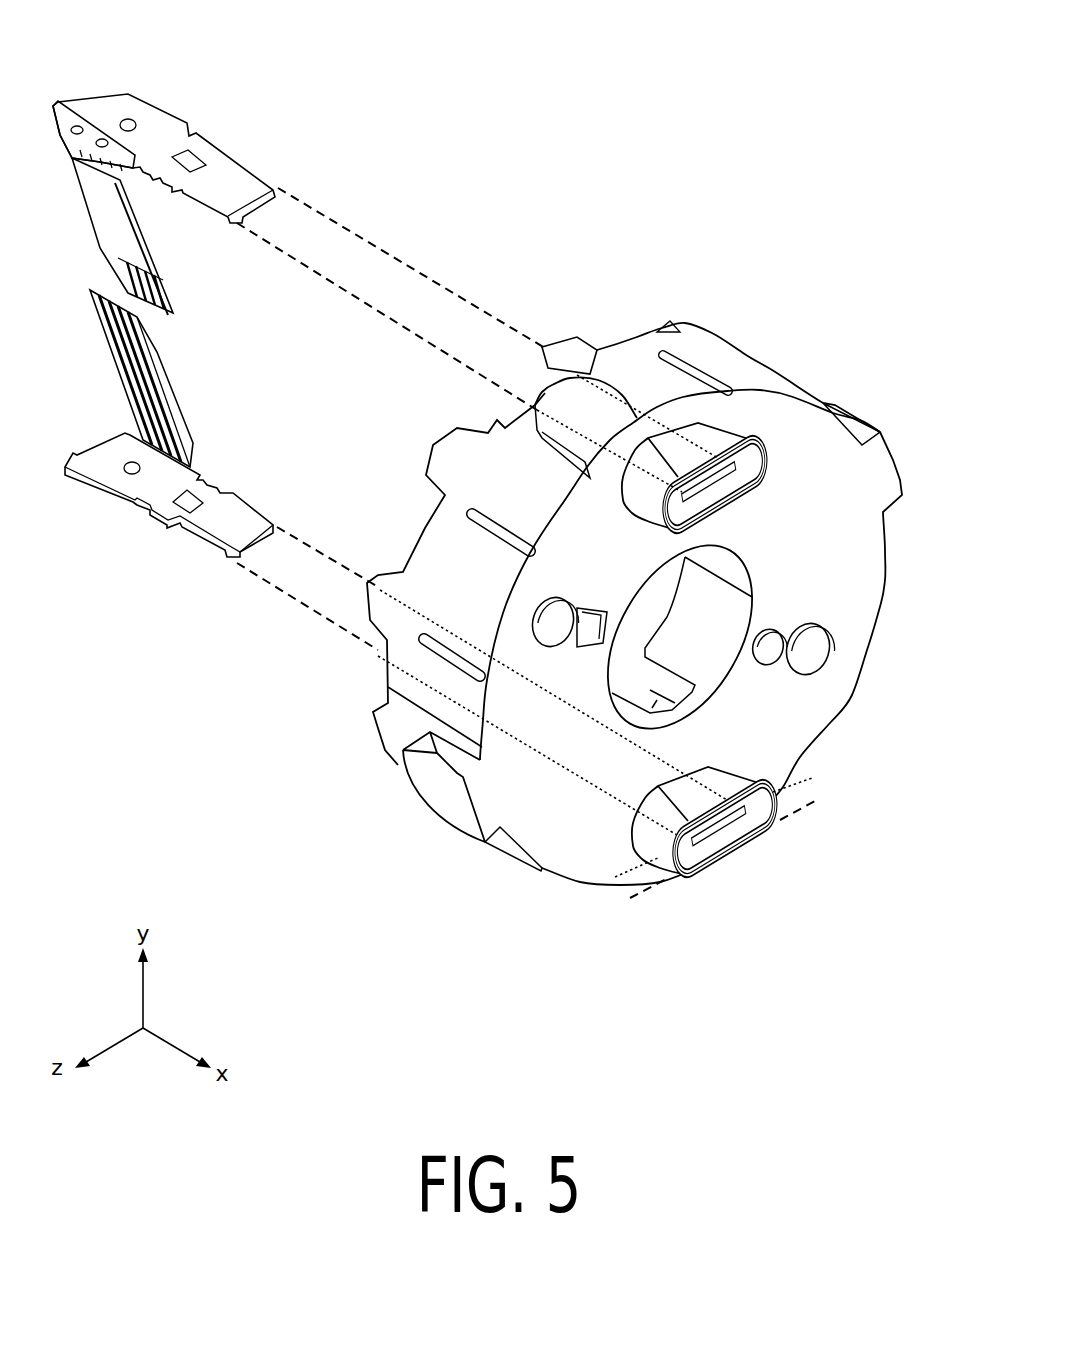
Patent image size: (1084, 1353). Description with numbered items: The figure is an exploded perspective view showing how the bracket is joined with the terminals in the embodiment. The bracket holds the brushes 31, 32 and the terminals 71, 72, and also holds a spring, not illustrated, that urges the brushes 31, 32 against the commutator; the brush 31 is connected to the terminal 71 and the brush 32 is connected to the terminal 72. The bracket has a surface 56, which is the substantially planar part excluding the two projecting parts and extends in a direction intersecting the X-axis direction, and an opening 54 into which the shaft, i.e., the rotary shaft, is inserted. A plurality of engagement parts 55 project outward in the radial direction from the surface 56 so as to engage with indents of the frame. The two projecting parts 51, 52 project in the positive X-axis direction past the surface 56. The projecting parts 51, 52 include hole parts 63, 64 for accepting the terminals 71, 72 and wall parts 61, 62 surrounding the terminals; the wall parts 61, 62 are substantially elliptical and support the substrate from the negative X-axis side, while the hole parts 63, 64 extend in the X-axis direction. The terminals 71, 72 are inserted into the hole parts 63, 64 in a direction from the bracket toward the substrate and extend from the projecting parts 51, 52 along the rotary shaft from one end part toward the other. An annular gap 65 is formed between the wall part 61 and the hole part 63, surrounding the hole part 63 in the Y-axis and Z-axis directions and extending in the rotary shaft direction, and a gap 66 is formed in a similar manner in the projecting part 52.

The brush 31 is at (128, 252).
The brush 32 is at (153, 405).
The projecting part 51 is at (704, 377).
The projecting part 52 is at (704, 902).
The opening 54 is at (672, 610).
The engagement part 55 is at (588, 402).
The surface 56 is at (840, 577).
The wall part 61 is at (682, 453).
The wall part 62 is at (657, 843).
The hole part 63 is at (718, 457).
The hole part 64 is at (718, 832).
The gap 65 is at (745, 467).
The gap 66 is at (755, 817).
The terminal 71 is at (233, 180).
The terminal 72 is at (253, 527).